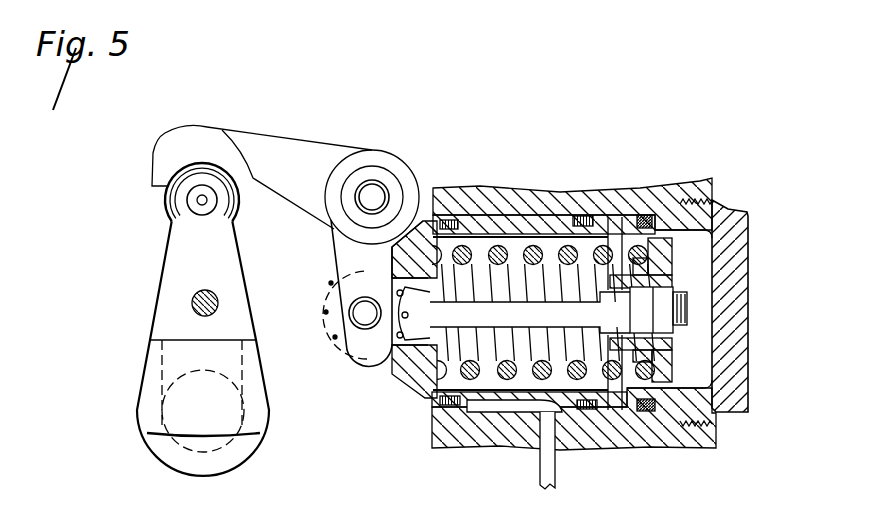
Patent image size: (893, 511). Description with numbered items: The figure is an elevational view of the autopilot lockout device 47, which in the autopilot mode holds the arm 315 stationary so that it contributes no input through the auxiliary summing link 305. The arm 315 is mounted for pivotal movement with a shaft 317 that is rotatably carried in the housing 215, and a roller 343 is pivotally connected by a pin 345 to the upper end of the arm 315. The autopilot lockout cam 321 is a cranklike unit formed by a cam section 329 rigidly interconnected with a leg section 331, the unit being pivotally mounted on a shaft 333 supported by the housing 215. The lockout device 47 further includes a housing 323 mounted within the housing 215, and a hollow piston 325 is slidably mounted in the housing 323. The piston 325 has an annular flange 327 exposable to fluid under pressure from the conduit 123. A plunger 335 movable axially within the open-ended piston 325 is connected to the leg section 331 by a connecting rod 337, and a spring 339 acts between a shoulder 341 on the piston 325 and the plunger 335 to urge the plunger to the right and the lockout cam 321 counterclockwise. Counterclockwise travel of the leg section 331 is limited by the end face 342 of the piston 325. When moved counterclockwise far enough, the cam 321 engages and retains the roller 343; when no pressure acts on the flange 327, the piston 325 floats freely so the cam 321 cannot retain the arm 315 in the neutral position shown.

The autopilot lockout device 47 is at (734, 201).
The conduit 123 is at (538, 466).
The housing 215 is at (296, 106).
The auxiliary summing link 305 is at (200, 303).
The arm 315 is at (160, 271).
The shaft 317 is at (233, 437).
The autopilot lockout cam 321 is at (263, 113).
The housing 323 is at (480, 192).
The hollow piston 325 is at (490, 397).
The annular flange 327 is at (567, 405).
The cam section 329 is at (307, 160).
The leg section 331 is at (341, 249).
The shaft 333 is at (373, 194).
The plunger 335 is at (662, 366).
The connecting rod 337 is at (482, 314).
The spring 339 is at (565, 247).
The shoulder 341 is at (438, 184).
The end face 342 is at (378, 372).
The roller 343 is at (160, 185).
The pin 345 is at (200, 201).